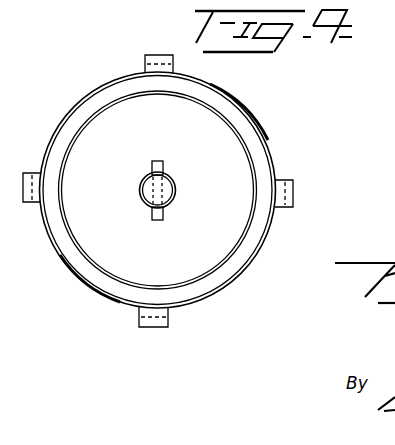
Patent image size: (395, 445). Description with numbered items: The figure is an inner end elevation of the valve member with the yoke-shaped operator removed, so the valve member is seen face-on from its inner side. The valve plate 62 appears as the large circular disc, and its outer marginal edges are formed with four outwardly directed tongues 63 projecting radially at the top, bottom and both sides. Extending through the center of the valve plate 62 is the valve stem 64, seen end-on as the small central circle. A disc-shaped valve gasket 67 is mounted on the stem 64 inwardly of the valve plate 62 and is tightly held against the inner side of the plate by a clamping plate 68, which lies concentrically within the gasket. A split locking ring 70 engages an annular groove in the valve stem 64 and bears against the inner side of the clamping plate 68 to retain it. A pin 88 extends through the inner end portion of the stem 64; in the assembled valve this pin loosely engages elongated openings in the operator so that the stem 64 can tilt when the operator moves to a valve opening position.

The valve plate 62 is at (240, 275).
The tongues 63 is at (287, 209).
The valve stem 64 is at (167, 191).
The valve gasket 67 is at (260, 158).
The clamping plate 68 is at (220, 138).
The split locking ring 70 is at (167, 209).
The pin 88 is at (160, 163).